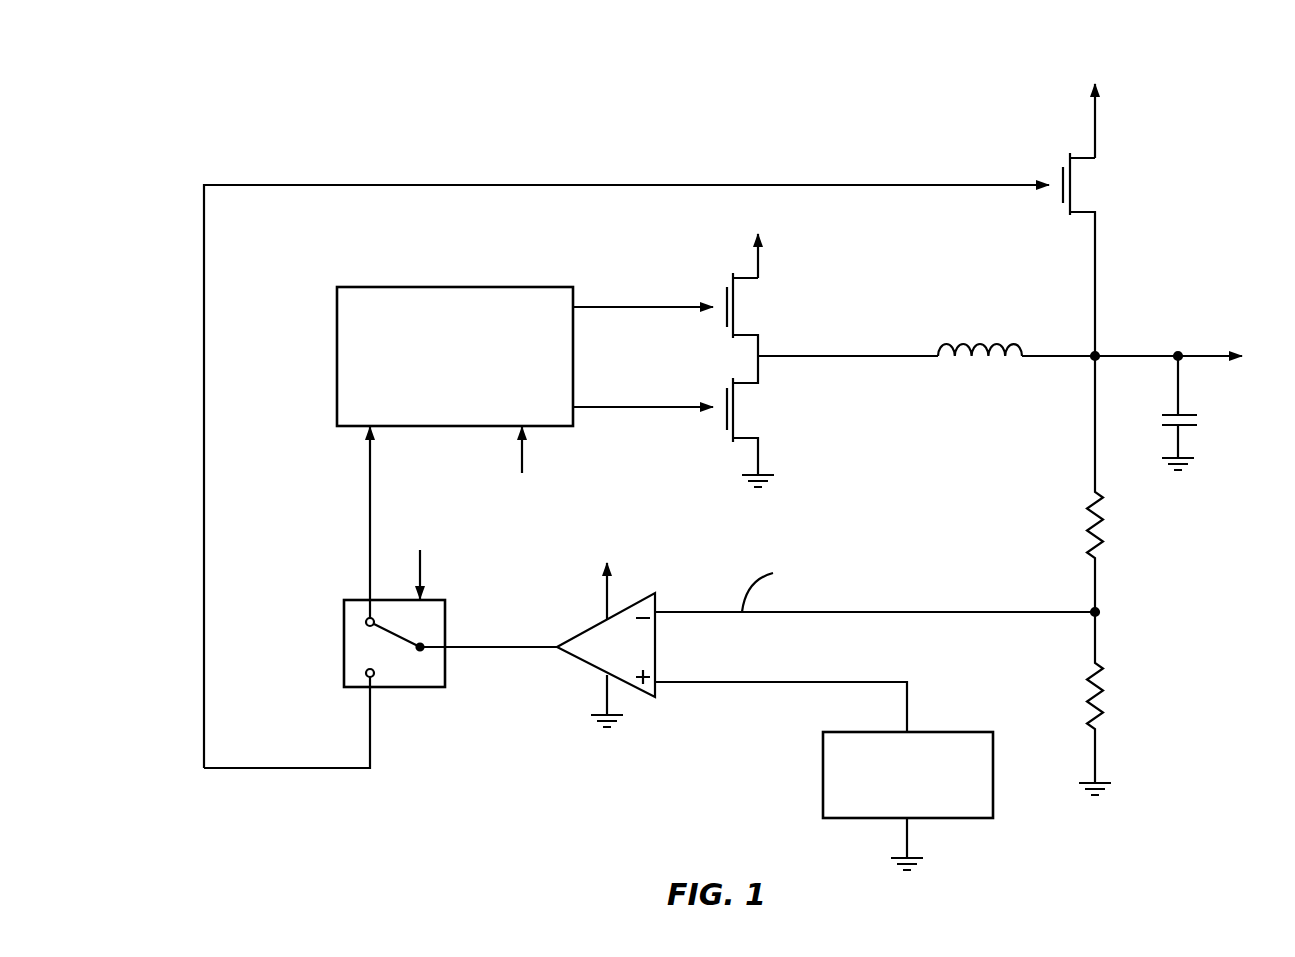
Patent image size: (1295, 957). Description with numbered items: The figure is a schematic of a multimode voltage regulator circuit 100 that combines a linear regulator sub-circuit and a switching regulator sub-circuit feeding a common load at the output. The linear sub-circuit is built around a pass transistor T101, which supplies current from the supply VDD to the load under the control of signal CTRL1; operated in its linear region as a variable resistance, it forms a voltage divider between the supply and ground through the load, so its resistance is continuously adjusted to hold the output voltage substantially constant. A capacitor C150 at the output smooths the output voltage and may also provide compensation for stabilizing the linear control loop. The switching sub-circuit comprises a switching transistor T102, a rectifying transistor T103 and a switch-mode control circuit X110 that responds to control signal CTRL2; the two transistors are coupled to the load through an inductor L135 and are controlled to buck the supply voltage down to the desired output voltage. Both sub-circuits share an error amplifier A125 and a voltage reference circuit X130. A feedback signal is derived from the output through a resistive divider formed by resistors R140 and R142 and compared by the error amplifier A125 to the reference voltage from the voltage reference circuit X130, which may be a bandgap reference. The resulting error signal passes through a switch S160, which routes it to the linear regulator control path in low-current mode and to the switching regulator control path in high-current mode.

The multimode voltage regulator circuit 100 is at (150, 728).
The pass transistor T101 is at (1152, 202).
The switching transistor T102 is at (735, 277).
The rectifying transistor T103 is at (735, 421).
The switch-mode control circuit X110 is at (455, 356).
The inductor L135 is at (980, 337).
The capacitor C150 is at (1210, 413).
The resistor R140 is at (1127, 484).
The resistor R142 is at (1123, 703).
The error amplifier A125 is at (668, 723).
The voltage reference circuit X130 is at (908, 801).
The switch S160 is at (395, 687).